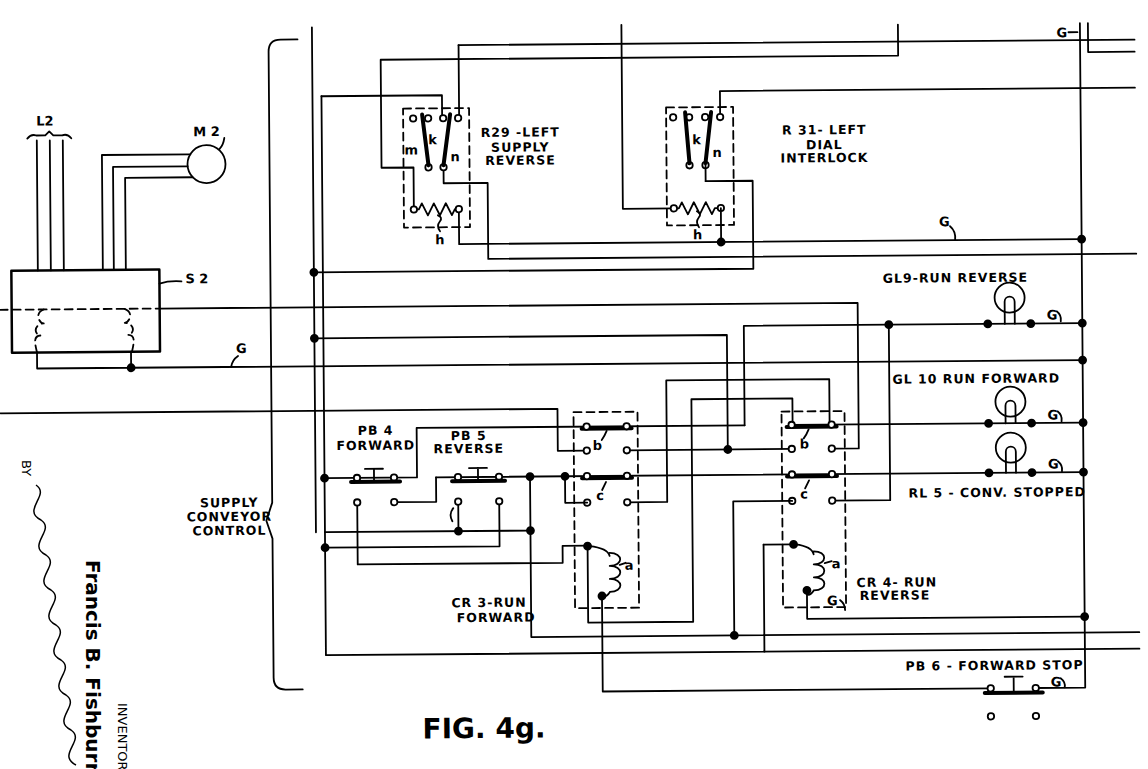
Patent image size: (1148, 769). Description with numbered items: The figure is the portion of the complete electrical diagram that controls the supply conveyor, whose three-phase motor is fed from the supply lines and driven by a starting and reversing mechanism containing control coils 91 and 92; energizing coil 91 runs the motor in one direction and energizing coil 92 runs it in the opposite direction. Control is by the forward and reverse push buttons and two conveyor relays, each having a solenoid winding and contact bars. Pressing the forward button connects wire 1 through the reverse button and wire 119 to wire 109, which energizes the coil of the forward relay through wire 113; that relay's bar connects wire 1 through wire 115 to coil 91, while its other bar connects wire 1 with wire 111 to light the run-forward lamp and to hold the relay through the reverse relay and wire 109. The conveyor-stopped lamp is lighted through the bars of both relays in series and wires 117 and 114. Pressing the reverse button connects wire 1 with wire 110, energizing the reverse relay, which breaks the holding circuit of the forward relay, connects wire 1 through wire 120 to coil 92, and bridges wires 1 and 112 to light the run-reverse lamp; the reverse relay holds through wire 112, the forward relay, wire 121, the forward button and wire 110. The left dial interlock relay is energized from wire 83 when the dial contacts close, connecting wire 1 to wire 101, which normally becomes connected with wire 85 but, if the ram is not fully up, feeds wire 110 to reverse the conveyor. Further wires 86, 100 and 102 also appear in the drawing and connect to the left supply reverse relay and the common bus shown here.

The wire 1 is at (314, 36).
The wire 83 is at (662, 209).
The wire 85 is at (1128, 54).
The line 86 is at (1126, 46).
The control coil 91 is at (45, 306).
The control coil 92 is at (119, 325).
The line 100 is at (645, 117).
The wire 101 is at (747, 93).
The line 102 is at (1124, 257).
The wire 109 is at (770, 400).
The wire 110 is at (348, 96).
The wire 111 is at (665, 381).
The wire 112 is at (636, 429).
The wire 113 is at (606, 598).
The wire 114 is at (968, 465).
The wire 115 is at (447, 407).
The wire 117 is at (761, 467).
The wire 119 is at (427, 498).
The wire 120 is at (599, 305).
The wire 121 is at (406, 479).